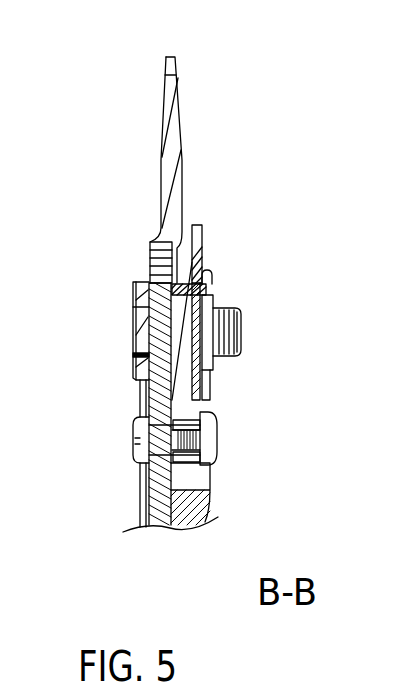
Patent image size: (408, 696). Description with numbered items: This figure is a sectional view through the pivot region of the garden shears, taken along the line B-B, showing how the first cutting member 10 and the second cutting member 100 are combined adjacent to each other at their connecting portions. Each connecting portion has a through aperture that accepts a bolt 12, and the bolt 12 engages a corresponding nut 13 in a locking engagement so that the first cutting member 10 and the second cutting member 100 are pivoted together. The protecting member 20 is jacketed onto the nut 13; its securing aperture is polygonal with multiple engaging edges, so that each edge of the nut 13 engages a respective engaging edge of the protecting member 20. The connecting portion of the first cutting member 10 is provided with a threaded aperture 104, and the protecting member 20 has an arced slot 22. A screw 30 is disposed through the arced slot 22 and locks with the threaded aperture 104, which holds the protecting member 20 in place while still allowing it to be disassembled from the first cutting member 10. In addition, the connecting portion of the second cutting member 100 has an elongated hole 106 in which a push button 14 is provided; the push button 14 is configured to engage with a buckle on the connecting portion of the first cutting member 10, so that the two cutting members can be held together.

The first cutting member 10 is at (182, 83).
The threaded aperture 104 is at (168, 270).
The arced slot 22 is at (202, 262).
The screw 30 is at (216, 282).
The second cutting member 100 is at (133, 355).
The bolt 12 is at (133, 295).
The nut 13 is at (214, 363).
The protecting member 20 is at (211, 322).
The push button 14 is at (217, 445).
The elongated hole 106 is at (143, 462).